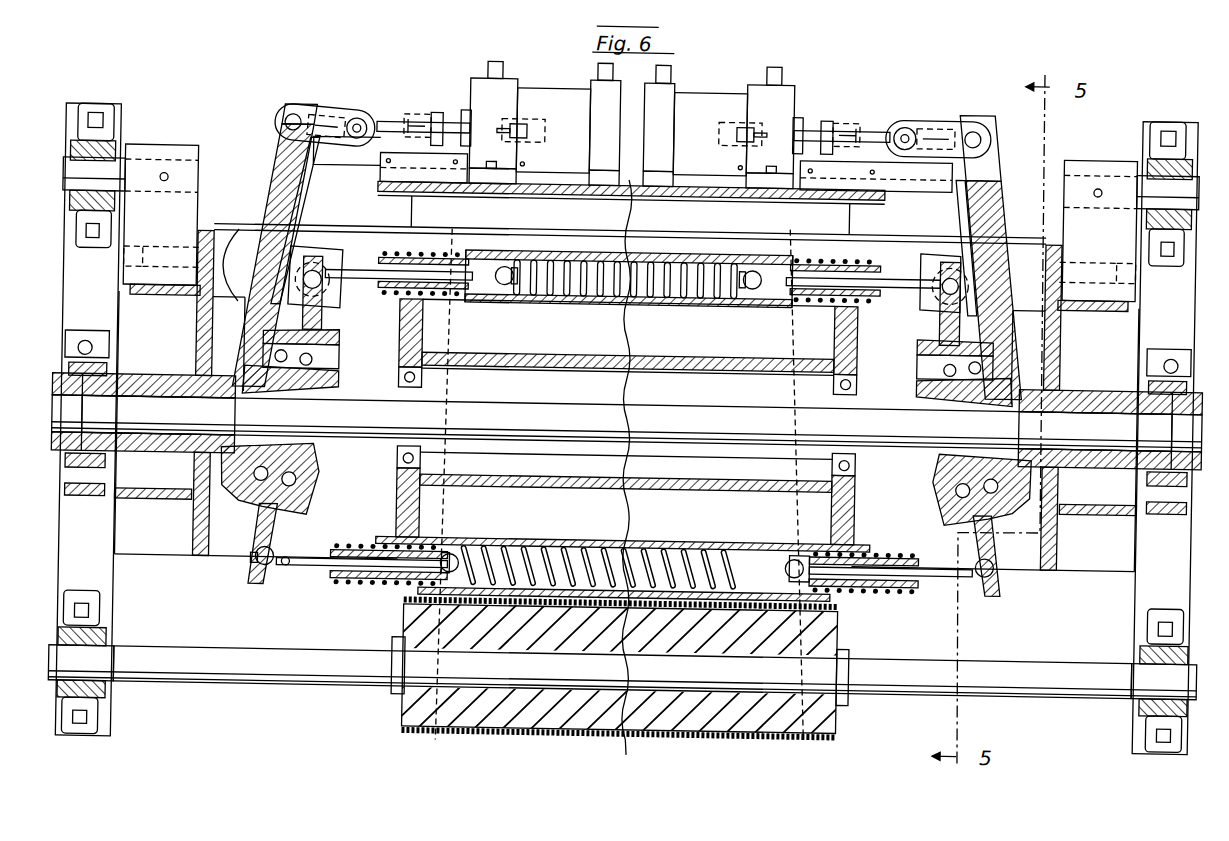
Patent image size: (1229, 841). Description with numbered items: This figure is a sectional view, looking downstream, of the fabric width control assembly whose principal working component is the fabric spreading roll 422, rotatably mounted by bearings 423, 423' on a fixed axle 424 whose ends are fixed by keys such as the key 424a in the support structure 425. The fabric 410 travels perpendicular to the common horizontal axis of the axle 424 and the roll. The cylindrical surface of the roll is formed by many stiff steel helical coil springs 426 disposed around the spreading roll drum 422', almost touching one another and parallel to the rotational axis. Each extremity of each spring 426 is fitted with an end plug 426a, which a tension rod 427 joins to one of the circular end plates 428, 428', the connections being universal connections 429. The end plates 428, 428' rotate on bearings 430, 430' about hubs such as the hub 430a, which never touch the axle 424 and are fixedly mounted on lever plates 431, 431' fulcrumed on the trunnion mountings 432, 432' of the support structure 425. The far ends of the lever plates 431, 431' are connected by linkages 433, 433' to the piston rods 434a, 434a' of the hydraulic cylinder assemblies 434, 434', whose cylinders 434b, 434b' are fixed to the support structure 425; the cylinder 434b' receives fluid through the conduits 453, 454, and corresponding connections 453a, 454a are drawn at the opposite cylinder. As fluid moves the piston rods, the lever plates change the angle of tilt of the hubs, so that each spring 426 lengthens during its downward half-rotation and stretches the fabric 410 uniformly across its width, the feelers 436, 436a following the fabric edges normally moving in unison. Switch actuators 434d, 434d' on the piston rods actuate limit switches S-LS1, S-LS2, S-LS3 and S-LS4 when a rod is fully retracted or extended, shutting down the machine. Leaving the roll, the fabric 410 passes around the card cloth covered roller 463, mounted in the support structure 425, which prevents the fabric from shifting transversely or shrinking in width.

The fabric 410 is at (582, 212).
The fabric spreading roll 422 is at (257, 462).
The spreading roll drum 422' is at (627, 422).
The bearing 423 is at (449, 417).
The bearing 423' is at (794, 424).
The fixed axle 424 is at (648, 428).
The key 424a is at (178, 390).
The support structure 425 is at (115, 127).
The helical coil spring 426 is at (724, 240).
The end plug 426a is at (372, 248).
The tension rod 427 is at (344, 290).
The end plate 428 is at (245, 543).
The end plate 428' is at (939, 428).
The universal connection 429 is at (255, 575).
The bearing 430 is at (296, 479).
The bearing 430' is at (943, 372).
The hub 430a is at (333, 374).
The lever plate 431 is at (268, 245).
The lever plate 431' is at (998, 258).
The trunnion mounting 432 is at (308, 221).
The trunnion mounting 432' is at (1002, 249).
The linkage 433 is at (337, 99).
The linkage 433' is at (939, 114).
The hydraulic cylinder assembly 434 is at (530, 110).
The hydraulic cylinder assembly 434' is at (695, 129).
The piston rod 434a is at (424, 102).
The piston rod 434a' is at (842, 116).
The cylinder 434b is at (583, 124).
The cylinder 434b' is at (741, 162).
The switch actuator 434d is at (404, 111).
The switch actuator 434d' is at (858, 120).
The feeler 436 is at (840, 592).
The feeler 436a is at (402, 590).
The conduit 453 is at (660, 56).
The switch plunger 453a is at (592, 52).
The conduit 454 is at (771, 56).
The switch plunger 454a is at (508, 36).
The card cloth covered roller 463 is at (829, 703).
The limit switch S-LS1 is at (330, 114).
The limit switch S-LS2 is at (496, 112).
The limit switch S-LS3 is at (720, 125).
The limit switch S-LS4 is at (929, 108).